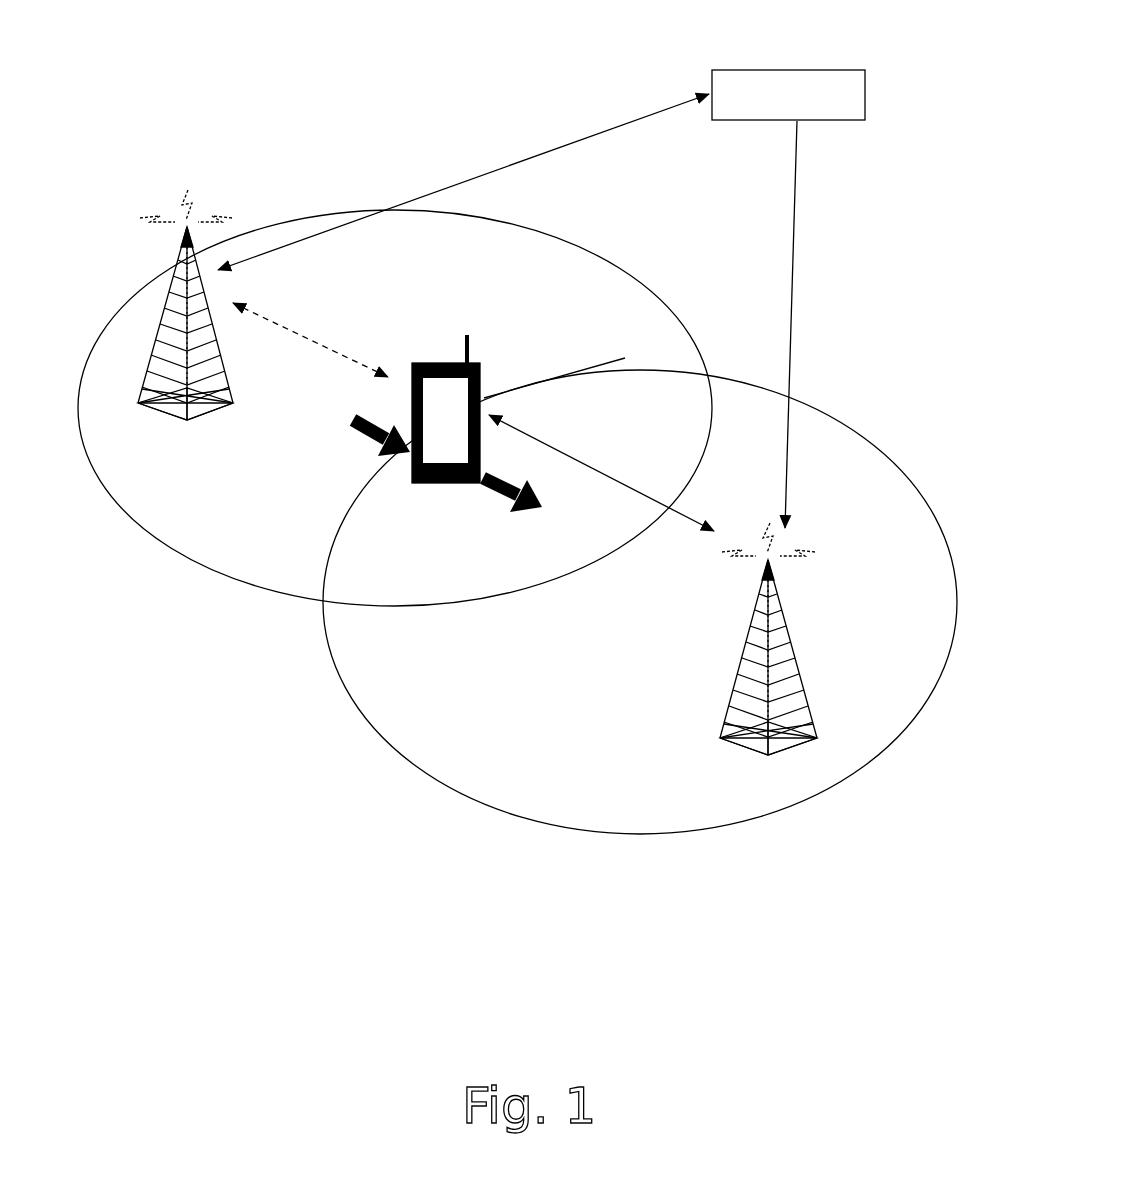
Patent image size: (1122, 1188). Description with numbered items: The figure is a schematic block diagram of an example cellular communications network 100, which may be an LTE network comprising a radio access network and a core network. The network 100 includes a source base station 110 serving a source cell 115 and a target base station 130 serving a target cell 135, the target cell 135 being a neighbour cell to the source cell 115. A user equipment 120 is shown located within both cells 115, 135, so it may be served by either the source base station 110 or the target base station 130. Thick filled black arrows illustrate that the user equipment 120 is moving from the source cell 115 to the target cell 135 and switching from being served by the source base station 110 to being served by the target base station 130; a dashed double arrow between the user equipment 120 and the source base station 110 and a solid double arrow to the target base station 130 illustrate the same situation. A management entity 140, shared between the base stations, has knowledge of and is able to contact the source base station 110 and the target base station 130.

The cellular communications network 100 is at (326, 879).
The source base station 110 is at (193, 418).
The source cell 115 is at (248, 598).
The user equipment 120 is at (484, 371).
The target base station 130 is at (812, 713).
The target cell 135 is at (355, 718).
The management entity 140 is at (788, 299).